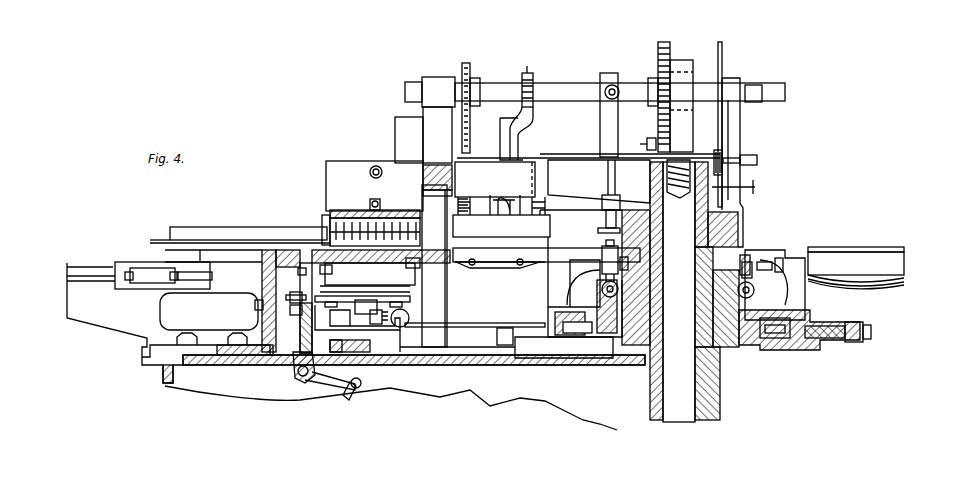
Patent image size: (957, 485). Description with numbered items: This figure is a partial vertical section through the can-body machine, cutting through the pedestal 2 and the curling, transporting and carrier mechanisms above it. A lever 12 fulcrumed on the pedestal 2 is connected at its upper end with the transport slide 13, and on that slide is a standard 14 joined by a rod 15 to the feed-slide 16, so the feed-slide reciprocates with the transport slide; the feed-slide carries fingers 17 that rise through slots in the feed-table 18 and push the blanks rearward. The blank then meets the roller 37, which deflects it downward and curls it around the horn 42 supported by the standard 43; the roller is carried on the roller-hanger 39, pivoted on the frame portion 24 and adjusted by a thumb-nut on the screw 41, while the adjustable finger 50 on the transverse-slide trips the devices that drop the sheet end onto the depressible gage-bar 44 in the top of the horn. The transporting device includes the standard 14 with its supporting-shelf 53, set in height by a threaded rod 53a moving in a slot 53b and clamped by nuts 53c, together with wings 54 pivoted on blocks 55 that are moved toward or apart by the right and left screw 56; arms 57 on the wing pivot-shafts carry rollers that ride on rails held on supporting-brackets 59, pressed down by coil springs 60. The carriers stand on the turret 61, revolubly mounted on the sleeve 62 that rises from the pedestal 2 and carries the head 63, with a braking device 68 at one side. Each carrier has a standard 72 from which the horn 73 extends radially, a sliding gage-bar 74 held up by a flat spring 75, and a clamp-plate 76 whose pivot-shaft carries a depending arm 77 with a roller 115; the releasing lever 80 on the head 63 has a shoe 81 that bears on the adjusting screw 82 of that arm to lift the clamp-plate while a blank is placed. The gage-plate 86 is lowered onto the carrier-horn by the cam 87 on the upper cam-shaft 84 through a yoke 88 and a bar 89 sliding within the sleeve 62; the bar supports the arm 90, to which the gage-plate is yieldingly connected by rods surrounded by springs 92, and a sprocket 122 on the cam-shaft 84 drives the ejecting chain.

The pedestal 2 is at (356, 346).
The lever 12 is at (347, 398).
The transport slide 13 is at (297, 368).
The standard 14 is at (300, 322).
The rod 15 is at (215, 296).
The feed-slide 16 is at (118, 290).
The fingers 17 is at (200, 254).
The feed-table 18 is at (160, 241).
The frame portion 24 is at (362, 212).
The roller 37 is at (322, 232).
The roller-hanger 39 is at (374, 186).
The screw 41 is at (377, 166).
The horn 42 is at (506, 271).
The standard 43 is at (290, 298).
The gage-bar 44 is at (380, 262).
The adjustable finger 50 is at (462, 327).
The supporting-shelf 53 is at (408, 272).
The threaded rod 53a is at (298, 272).
The slot 53b is at (290, 312).
The nuts 53c is at (262, 312).
The wings 54 is at (362, 287).
The blocks 55 is at (358, 353).
The right and left screw 56 is at (340, 353).
The arms 57 is at (405, 326).
The supporting-brackets 59 is at (505, 336).
The coil springs 60 is at (395, 328).
The turret 61 is at (768, 352).
The sleeve 62 is at (700, 310).
The head 63 is at (728, 224).
The braking device 68 is at (812, 352).
The standard 72 is at (772, 285).
The horn 73 is at (856, 263).
The gage-bar 74 is at (478, 270).
The flat spring 75 is at (892, 286).
The clamp-plate 76 is at (500, 250).
The depending arm 77 is at (754, 292).
The releasing lever 80 is at (620, 100).
The shoe 81 is at (604, 232).
The adjusting screw 82 is at (602, 250).
The upper cam-shaft 84 is at (753, 93).
The gage-plate 86 is at (501, 199).
The cam 87 is at (692, 75).
The yoke 88 is at (673, 97).
The bar 89 is at (685, 291).
The arm 90 is at (599, 181).
The springs 92 is at (548, 208).
The roller 115 is at (628, 268).
The sprocket 122 is at (722, 58).